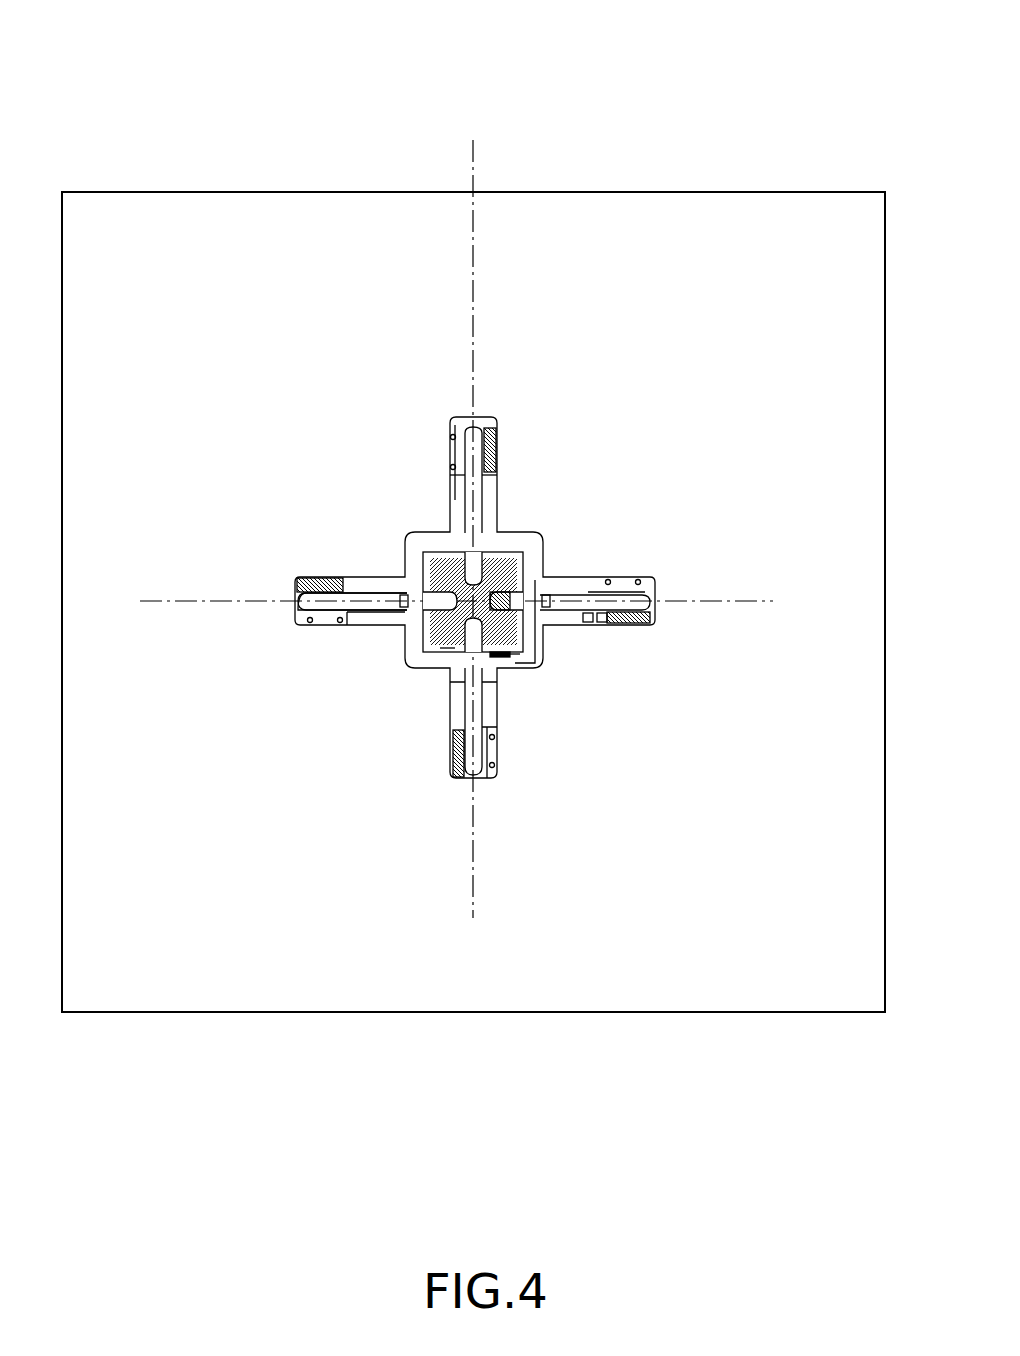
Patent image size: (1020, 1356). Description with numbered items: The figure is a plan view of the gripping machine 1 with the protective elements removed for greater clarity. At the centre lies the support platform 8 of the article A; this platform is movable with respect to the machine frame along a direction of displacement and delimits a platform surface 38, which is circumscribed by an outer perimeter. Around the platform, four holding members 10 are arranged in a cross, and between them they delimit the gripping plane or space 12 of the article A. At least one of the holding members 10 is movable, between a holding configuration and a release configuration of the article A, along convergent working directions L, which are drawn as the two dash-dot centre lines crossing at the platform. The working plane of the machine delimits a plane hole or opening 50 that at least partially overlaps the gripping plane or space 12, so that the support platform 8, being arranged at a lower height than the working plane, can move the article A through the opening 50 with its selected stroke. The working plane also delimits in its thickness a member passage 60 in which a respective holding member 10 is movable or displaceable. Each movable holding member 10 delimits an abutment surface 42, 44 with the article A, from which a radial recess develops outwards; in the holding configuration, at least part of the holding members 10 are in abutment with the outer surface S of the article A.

The gripping machine 1 is at (258, 108).
The support platform 8 is at (534, 563).
The holding members 10 is at (487, 497).
The gripping plane or space 12 is at (481, 543).
The platform surface 38 is at (443, 552).
The abutment surface 42 is at (402, 625).
The abutment surface 44 is at (352, 601).
The plane hole or opening 50 is at (405, 567).
The member passage 60 is at (650, 582).
The article A is at (446, 650).
The surface of the article S is at (503, 656).
The working directions L is at (473, 143).